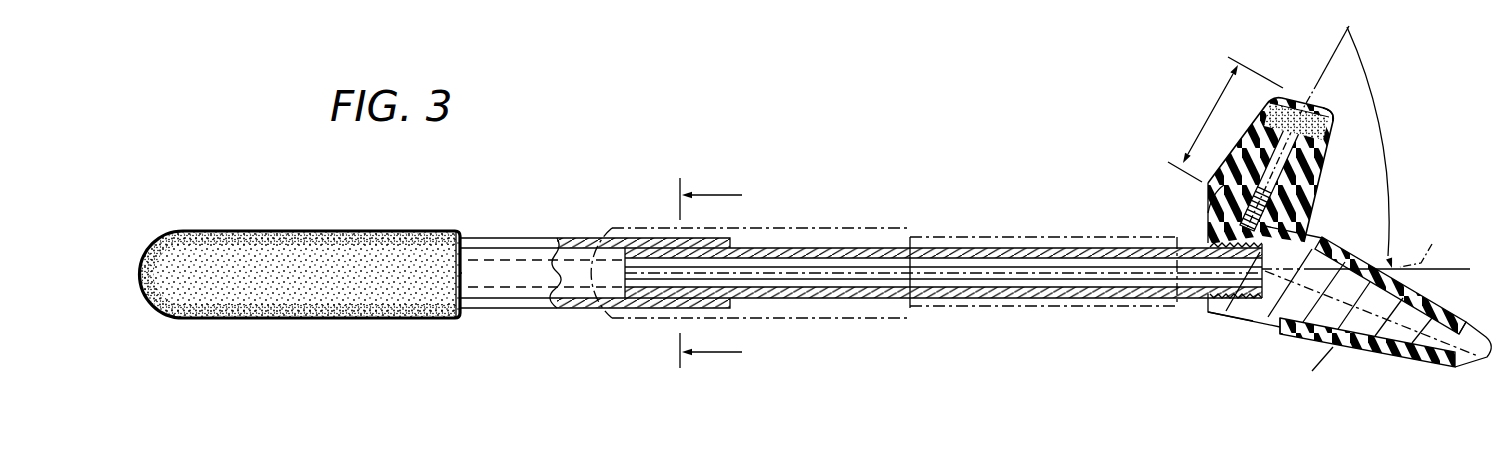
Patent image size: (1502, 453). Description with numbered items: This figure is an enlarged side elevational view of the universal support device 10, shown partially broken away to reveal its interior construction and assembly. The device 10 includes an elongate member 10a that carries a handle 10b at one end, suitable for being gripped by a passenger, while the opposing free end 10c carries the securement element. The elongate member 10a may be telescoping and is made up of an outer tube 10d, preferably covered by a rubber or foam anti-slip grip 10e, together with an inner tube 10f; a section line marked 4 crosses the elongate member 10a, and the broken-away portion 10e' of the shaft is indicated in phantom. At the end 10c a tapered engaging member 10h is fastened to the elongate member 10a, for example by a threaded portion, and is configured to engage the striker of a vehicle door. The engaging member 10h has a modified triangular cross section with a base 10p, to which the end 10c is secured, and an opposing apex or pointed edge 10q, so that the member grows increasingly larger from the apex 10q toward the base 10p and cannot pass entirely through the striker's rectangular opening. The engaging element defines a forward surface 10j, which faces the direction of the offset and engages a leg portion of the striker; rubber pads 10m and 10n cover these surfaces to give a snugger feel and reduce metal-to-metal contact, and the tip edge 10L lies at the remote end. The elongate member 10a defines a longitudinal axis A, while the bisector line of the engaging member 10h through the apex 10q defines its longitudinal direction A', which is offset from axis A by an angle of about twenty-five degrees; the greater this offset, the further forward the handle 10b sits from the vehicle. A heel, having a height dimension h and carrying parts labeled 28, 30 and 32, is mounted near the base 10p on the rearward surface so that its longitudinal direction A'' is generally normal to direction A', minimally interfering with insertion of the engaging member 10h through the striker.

The device 10 is at (1004, 348).
The elongate member 10a is at (910, 233).
The handle 10b is at (398, 328).
The opposing end 10c is at (1216, 335).
The outer tube 10d is at (505, 292).
The anti-slip grip 10e is at (299, 302).
The handle sleeve portion 10e' is at (733, 253).
The inner tube 10f is at (1056, 246).
The tapered engaging member 10h is at (1250, 335).
The forward surface 10j is at (1282, 356).
The blade tip edge 10L is at (1470, 307).
The rubber pad 10m is at (1403, 358).
The rubber pad 10n is at (1376, 250).
The base 10p is at (1208, 212).
The apex 10q is at (1490, 352).
The screw head 28 is at (1306, 80).
The adjustment screw 30 is at (1310, 166).
The screw top end 32 is at (1337, 92).
The section line 4- 4 is at (723, 274).
The height dimension h is at (1212, 120).
The longitudinal axis A is at (1415, 240).
The longitudinal direction A' is at (1371, 340).
The longitudinal direction of the heel A'' is at (1312, 60).